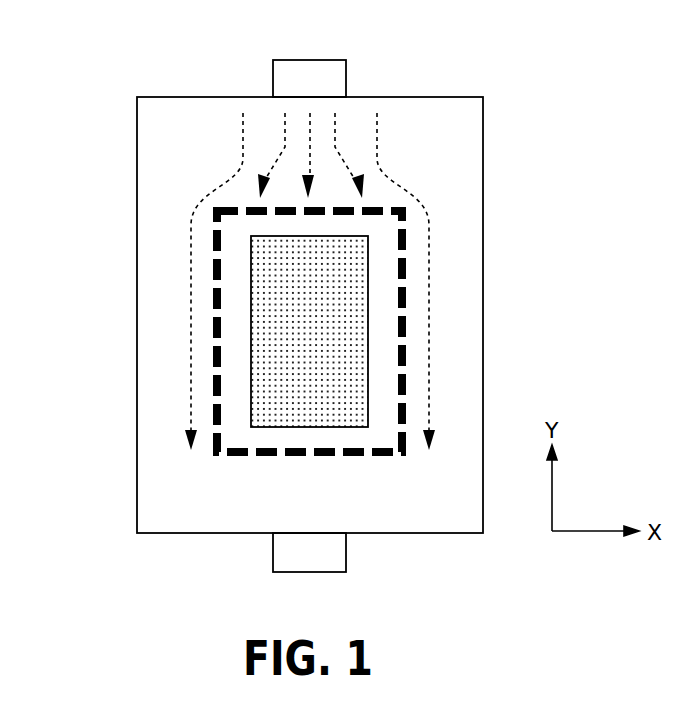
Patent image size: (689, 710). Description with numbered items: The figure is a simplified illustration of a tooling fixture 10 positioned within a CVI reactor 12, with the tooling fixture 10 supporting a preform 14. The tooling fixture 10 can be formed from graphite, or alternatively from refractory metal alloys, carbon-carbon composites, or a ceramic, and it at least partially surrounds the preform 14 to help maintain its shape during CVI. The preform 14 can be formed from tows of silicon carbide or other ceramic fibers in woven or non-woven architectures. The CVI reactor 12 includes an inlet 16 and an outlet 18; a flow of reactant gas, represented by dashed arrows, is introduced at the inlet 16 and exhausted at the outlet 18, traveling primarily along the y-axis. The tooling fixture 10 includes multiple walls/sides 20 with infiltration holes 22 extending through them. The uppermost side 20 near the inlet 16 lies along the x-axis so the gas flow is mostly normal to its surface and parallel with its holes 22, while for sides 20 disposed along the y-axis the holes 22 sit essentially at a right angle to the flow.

The tooling fixture 10 is at (105, 185).
The CVI reactor 12 is at (258, 464).
The preform 14 is at (322, 337).
The inlet 16 is at (273, 83).
The outlet 18 is at (347, 545).
The walls/sides 20 is at (405, 367).
The infiltration holes 22 is at (355, 457).